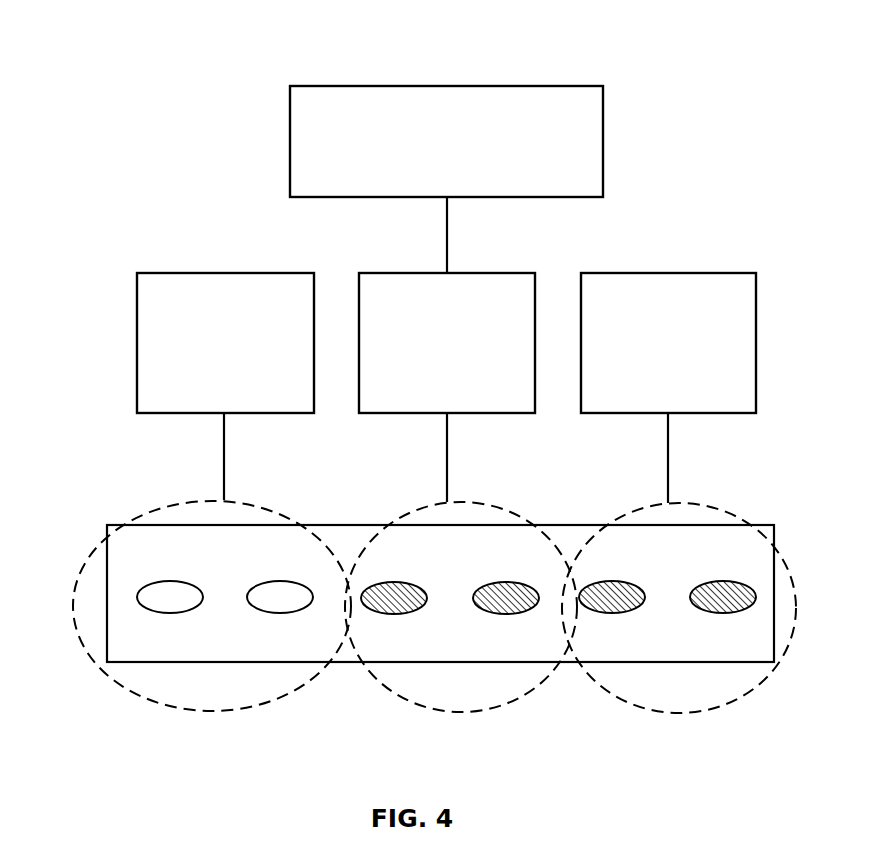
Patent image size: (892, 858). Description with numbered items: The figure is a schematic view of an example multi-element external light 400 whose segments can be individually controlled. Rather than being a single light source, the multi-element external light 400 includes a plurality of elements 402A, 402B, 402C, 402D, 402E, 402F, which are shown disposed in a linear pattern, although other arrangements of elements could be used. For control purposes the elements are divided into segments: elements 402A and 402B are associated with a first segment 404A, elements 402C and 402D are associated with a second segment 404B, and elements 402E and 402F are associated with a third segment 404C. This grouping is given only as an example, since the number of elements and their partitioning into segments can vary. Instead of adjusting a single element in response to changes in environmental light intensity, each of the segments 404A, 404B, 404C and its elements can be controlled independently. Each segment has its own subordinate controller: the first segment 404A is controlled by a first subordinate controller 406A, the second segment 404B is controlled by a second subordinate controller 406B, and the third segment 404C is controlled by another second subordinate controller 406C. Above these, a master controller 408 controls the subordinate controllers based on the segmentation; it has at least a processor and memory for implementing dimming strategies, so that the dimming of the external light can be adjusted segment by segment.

The multi-element external light 400 is at (173, 54).
The master controller 408 is at (358, 86).
The first subordinate controller 406A is at (220, 273).
The second subordinate controller 406B is at (444, 273).
The second subordinate controller 406C is at (666, 273).
The element 402A is at (166, 581).
The element 402B is at (282, 581).
The element 402C is at (397, 582).
The element 402D is at (520, 582).
The element 402E is at (607, 581).
The element 402F is at (728, 581).
The first segment 404A is at (198, 710).
The second segment 404B is at (445, 712).
The third segment 404C is at (672, 713).